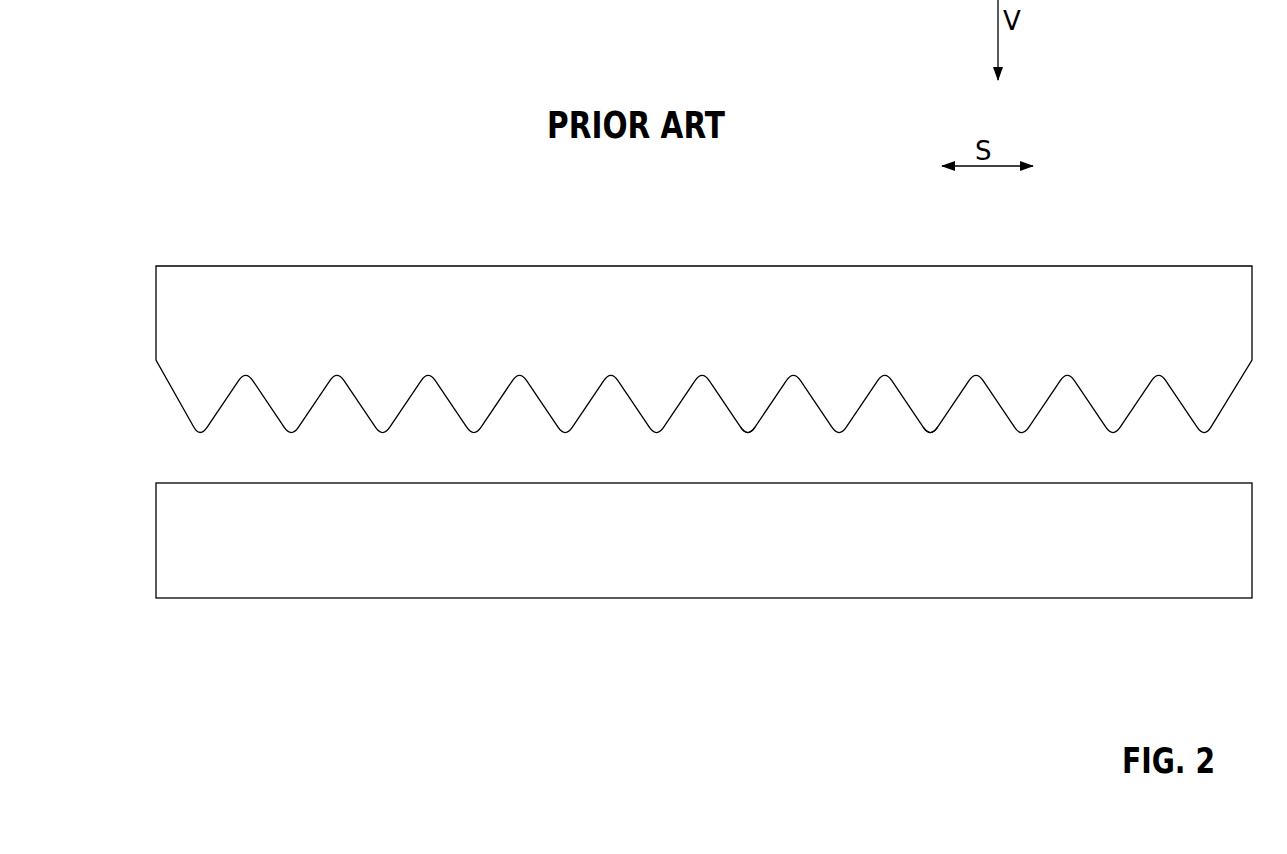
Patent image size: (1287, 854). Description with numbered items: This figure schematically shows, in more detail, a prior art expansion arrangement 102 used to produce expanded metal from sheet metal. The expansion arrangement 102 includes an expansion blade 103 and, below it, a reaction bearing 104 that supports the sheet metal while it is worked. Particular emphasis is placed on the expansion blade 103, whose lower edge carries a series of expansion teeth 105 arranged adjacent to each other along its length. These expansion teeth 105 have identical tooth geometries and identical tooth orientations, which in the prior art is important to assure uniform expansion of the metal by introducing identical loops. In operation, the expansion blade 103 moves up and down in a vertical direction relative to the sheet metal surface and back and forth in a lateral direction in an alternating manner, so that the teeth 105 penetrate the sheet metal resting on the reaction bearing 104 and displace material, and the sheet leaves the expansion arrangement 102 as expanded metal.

The expansion arrangement 102 is at (477, 188).
The expansion blade 103 is at (1188, 298).
The reaction bearing 104 is at (1197, 562).
The expansion teeth 105 is at (749, 442).